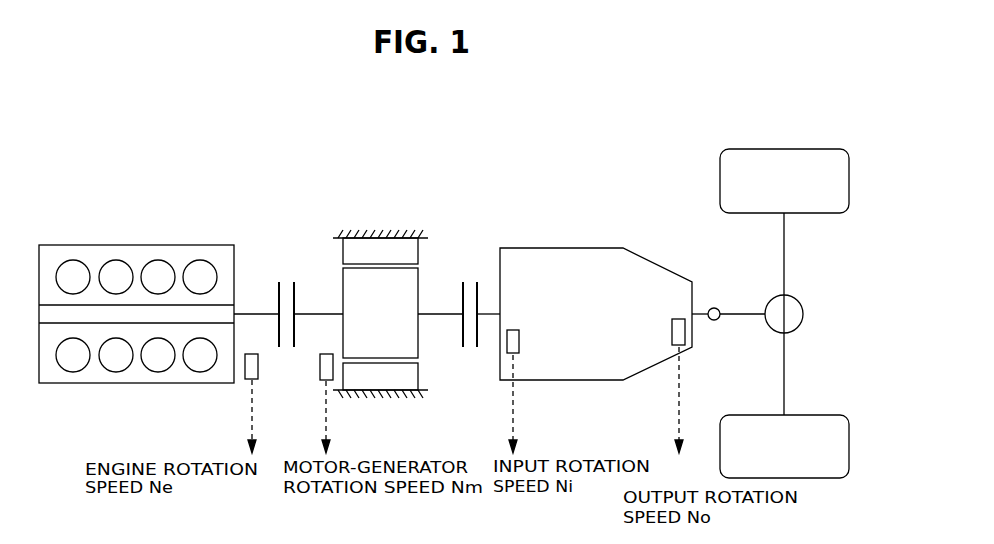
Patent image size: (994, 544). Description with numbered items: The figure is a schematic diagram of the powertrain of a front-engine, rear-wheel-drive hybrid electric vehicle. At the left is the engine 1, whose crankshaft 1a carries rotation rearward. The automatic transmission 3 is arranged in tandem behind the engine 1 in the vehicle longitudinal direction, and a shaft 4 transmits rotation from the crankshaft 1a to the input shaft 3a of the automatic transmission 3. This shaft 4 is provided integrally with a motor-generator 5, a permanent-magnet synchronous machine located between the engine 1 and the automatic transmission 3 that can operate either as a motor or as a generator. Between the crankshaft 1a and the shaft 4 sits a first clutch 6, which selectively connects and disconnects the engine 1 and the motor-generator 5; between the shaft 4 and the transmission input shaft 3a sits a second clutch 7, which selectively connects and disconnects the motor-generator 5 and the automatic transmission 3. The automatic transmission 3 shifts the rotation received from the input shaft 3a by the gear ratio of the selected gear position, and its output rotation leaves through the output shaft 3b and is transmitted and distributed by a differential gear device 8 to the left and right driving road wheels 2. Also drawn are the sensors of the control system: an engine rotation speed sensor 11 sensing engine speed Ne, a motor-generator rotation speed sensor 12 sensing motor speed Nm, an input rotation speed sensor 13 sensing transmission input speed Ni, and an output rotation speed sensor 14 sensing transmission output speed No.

The engine 1 is at (88, 236).
The crankshaft 1a is at (263, 307).
The driving road wheel 2 is at (813, 148).
The automatic transmission 3 is at (580, 238).
The input shaft 3a is at (483, 307).
The transmission output shaft 3b is at (702, 308).
The shaft 4 is at (437, 310).
The motor-generator 5 is at (368, 226).
The first clutch 6 is at (285, 270).
The second clutch 7 is at (469, 362).
The differential gear device 8 is at (805, 314).
The engine rotation speed sensor 11 is at (247, 382).
The motor-generator rotation speed sensor 12 is at (322, 382).
The input rotation speed sensor 13 is at (515, 355).
The output rotation speed sensor 14 is at (675, 355).